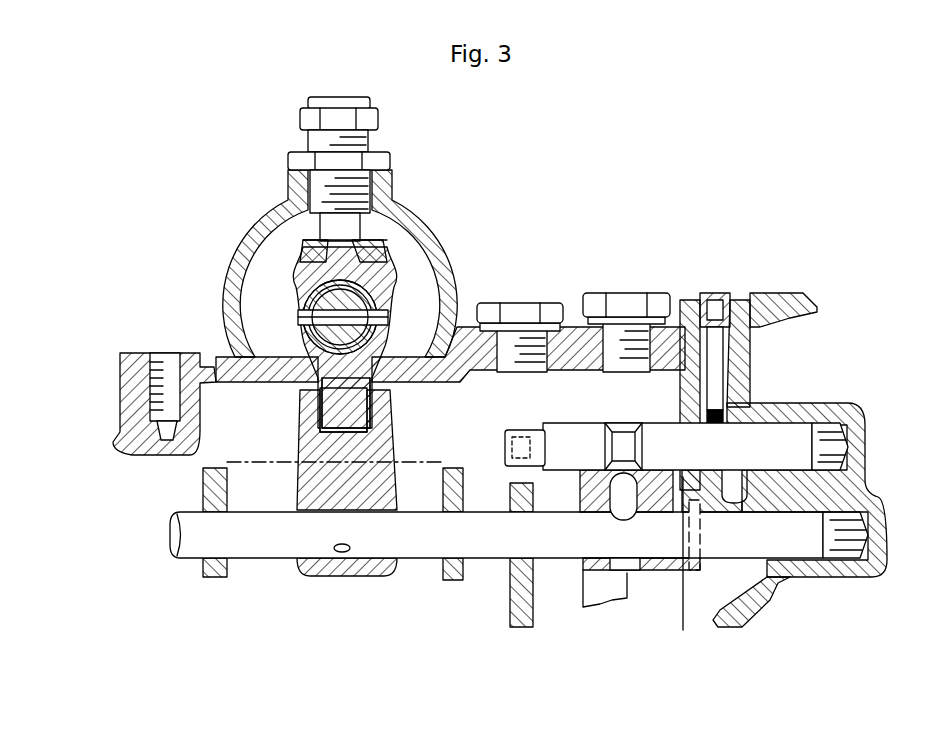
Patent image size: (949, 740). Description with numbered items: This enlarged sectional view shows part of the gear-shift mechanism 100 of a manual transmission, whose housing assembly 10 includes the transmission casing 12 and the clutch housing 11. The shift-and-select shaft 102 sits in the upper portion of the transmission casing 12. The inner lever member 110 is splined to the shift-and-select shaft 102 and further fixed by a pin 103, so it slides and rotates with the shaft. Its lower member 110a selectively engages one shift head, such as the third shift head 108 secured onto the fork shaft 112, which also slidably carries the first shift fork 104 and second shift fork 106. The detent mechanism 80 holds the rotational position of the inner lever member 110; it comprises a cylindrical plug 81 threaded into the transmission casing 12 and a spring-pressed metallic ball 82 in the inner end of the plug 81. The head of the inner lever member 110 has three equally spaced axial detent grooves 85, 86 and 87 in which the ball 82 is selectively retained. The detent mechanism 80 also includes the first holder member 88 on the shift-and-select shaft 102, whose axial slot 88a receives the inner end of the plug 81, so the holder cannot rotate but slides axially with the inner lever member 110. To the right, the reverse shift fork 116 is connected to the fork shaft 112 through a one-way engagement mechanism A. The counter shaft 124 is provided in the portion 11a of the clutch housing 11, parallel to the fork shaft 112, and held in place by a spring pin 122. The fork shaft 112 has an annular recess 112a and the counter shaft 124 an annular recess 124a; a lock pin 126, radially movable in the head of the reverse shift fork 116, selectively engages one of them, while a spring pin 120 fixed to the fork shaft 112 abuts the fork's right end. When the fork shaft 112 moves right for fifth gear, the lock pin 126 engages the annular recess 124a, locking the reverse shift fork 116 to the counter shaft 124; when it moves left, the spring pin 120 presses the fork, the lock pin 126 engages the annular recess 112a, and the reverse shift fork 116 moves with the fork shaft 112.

The detent mechanism 80 is at (250, 196).
The cylindrical plug 81 is at (308, 178).
The metallic ball 82 is at (386, 278).
The axial detent groove 85 is at (380, 258).
The axial detent groove 86 is at (376, 232).
The axial detent groove 87 is at (302, 253).
The first holder member 88 is at (300, 338).
The axial slot 88a is at (305, 223).
The transmission casing 12 is at (228, 318).
The shift-and-select shaft 102 is at (376, 306).
The pin 103 is at (386, 346).
The inner lever member 110 is at (247, 353).
The lower member 110a is at (300, 410).
The third shift head 108 is at (383, 446).
The gear-shift mechanism 100 is at (466, 327).
The housing assembly 10 is at (675, 310).
The clutch housing 11 is at (800, 300).
The portion of the clutch housing 11a is at (845, 413).
The spring pin 122 is at (750, 400).
The counter shaft 124 is at (738, 462).
The annular recess 124a is at (630, 426).
The lock pin 126 is at (582, 487).
The one-way engagement mechanism A is at (583, 497).
The fork shaft 112 is at (480, 553).
The annular recess 112a is at (624, 521).
The second shift fork 106 is at (227, 562).
The first shift fork 104 is at (510, 590).
The reverse shift fork 116 is at (613, 598).
The spring pin 120 is at (700, 567).